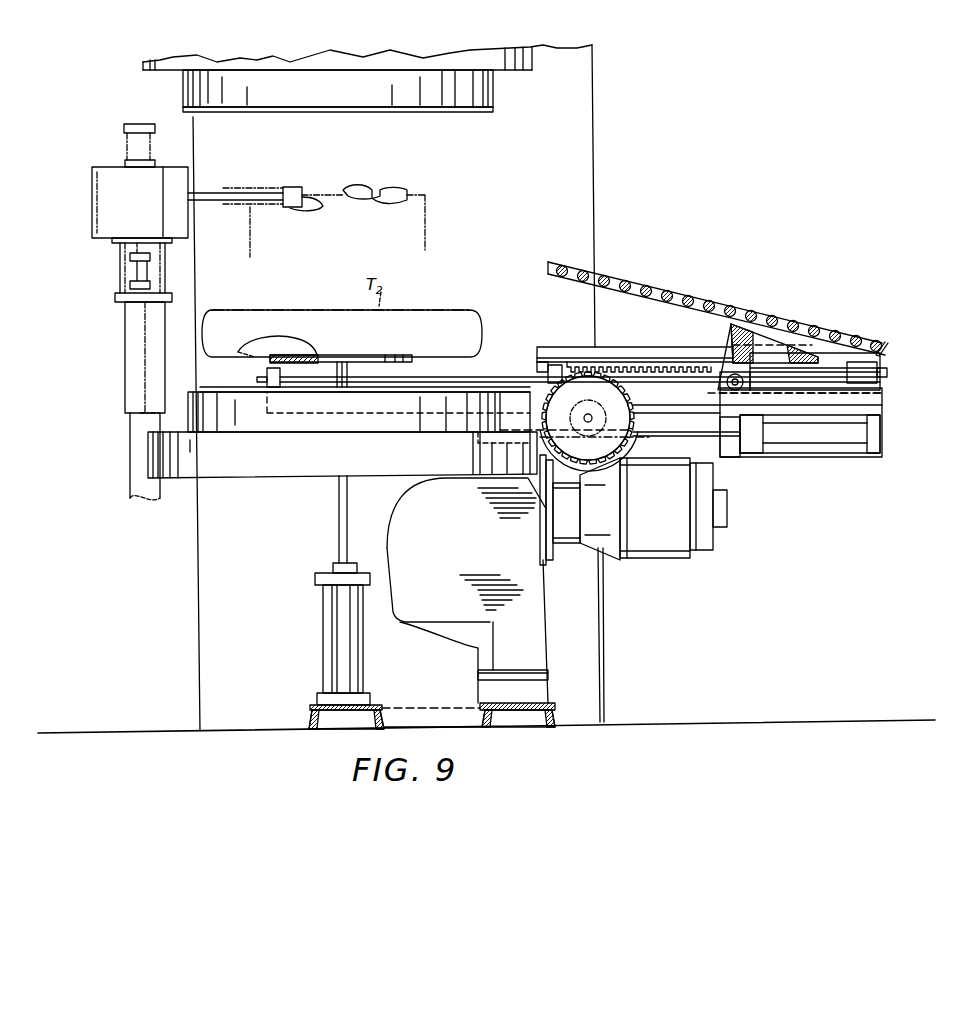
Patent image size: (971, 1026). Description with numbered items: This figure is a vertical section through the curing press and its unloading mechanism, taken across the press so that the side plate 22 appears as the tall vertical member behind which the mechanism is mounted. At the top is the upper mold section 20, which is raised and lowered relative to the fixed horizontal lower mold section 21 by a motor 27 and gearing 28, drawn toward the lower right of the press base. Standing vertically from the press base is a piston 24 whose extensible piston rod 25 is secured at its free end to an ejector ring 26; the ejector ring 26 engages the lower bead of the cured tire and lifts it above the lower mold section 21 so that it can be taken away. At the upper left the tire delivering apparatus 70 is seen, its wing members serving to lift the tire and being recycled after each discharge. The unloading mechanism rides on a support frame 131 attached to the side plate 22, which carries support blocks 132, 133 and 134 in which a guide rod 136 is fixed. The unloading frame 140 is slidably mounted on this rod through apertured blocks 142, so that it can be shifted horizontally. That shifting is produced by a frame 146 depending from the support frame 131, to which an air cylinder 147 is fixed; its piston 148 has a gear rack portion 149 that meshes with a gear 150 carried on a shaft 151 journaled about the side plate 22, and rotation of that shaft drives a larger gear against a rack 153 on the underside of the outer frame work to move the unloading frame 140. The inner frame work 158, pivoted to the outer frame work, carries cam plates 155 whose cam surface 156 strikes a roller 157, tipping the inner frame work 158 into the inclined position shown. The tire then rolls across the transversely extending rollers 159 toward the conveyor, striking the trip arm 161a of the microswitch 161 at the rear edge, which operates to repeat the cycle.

The upper mold section 20 is at (480, 113).
The side plate 22 is at (592, 125).
The tire delivering apparatus 70 is at (125, 325).
The lower mold section 21 is at (252, 427).
The piston 24 is at (325, 660).
The piston rod 25 is at (340, 517).
The ejector ring 26 is at (390, 355).
The motor 27 is at (663, 560).
The gearing 28 is at (538, 582).
The support frame 131 is at (510, 380).
The support block 132 is at (267, 373).
The support block 133 is at (570, 365).
The support block 134 is at (880, 382).
The guide rod 136 is at (462, 375).
The unloading frame 140 is at (703, 295).
The apertured block 142 is at (553, 365).
The frame 146 is at (735, 458).
The air cylinder 147 is at (830, 452).
The piston 148 is at (652, 440).
The gear rack portion 149 is at (612, 434).
The gear 150 is at (632, 376).
The shaft 151 is at (584, 412).
The rack 153 is at (667, 373).
The cam plate 155 is at (730, 331).
The cam surface 156 is at (778, 328).
The roller 157 is at (728, 390).
The inner frame work 158 is at (660, 293).
The roller 159 is at (618, 275).
The microswitch 161 is at (883, 357).
The trip arm 161a is at (887, 340).